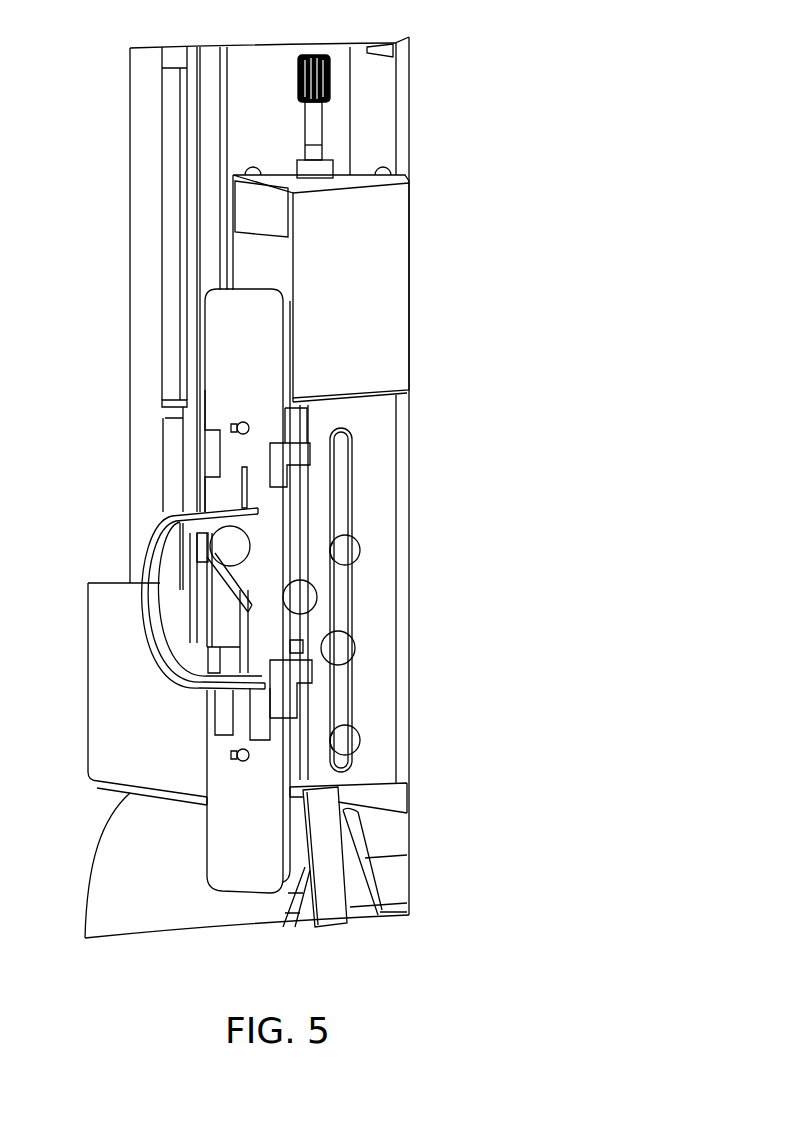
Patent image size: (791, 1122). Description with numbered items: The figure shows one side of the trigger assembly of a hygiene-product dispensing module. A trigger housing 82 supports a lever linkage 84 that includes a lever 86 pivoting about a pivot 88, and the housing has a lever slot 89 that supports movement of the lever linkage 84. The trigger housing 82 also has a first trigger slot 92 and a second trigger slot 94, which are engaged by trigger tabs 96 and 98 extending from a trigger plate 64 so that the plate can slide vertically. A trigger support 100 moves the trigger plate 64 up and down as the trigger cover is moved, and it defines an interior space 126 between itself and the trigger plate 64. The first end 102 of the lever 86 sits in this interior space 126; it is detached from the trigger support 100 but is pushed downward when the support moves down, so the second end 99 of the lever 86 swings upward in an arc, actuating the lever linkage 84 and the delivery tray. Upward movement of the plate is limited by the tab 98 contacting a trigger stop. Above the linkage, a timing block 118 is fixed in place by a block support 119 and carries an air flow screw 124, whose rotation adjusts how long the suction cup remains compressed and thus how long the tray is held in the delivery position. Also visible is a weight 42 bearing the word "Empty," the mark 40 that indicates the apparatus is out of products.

The mark 40 is at (117, 698).
The weight 42 is at (96, 762).
The trigger plate 64 is at (237, 840).
The trigger housing 82 is at (374, 462).
The lever linkage 84 is at (345, 837).
The lever 86 is at (240, 575).
The pivot 88 is at (303, 602).
The lever slot 89 is at (358, 596).
The first trigger slot 92 is at (307, 518).
The second trigger slot 94 is at (310, 760).
The trigger tab 96 is at (300, 452).
The trigger tab 98 is at (302, 672).
The second end 99 is at (337, 648).
The trigger support 100 is at (163, 540).
The first end 102 is at (215, 545).
The timing block 118 is at (262, 210).
The block support 119 is at (388, 270).
The air flow screw 124 is at (315, 125).
The interior space 126 is at (198, 630).